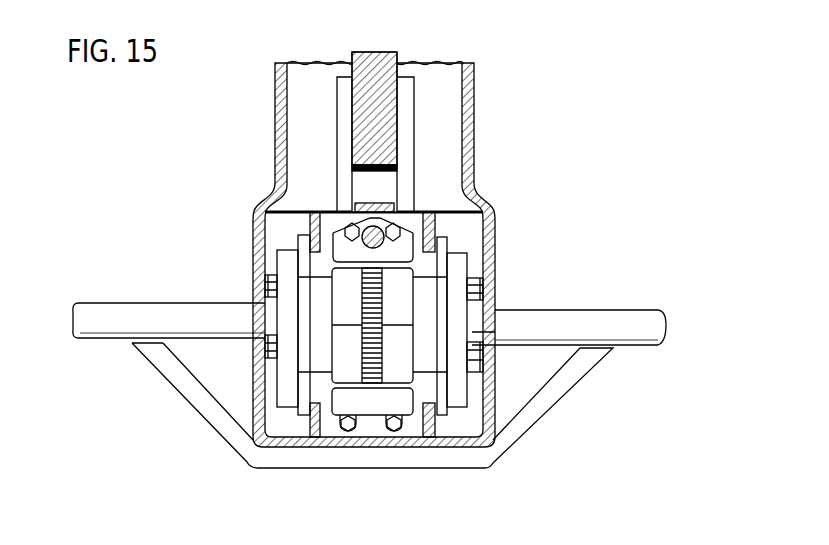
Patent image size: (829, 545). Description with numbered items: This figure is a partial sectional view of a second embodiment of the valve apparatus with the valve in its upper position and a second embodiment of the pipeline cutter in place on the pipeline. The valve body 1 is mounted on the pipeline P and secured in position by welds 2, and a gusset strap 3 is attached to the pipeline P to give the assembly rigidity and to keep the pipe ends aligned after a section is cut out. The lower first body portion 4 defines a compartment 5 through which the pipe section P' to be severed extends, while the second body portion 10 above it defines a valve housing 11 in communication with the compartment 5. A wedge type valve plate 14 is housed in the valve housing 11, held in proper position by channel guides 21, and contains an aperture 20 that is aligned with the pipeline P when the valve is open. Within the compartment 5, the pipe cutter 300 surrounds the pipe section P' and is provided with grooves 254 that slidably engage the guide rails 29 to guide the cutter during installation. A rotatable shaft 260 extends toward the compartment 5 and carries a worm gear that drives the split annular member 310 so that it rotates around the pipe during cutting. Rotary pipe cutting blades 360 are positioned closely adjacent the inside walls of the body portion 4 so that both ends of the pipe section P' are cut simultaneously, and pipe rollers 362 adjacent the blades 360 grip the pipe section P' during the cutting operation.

The valve body 1 is at (490, 117).
The welds 2 is at (252, 347).
The gusset strap 3 is at (538, 410).
The first body portion 4 is at (488, 240).
The compartment 5 is at (482, 226).
The second body portion 10 is at (472, 150).
The valve housing 11 is at (436, 78).
The wedge type valve plate 14 is at (383, 63).
The aperture 20 is at (380, 175).
The channel guides 21 is at (337, 125).
The guide rail 29 is at (314, 214).
The grooves 254 is at (308, 238).
The rotatable shaft 260 is at (373, 230).
The pipe cutter 300 is at (327, 303).
The split annular member 310 is at (285, 380).
The pipe cutting blades 360 is at (478, 287).
The pipe rollers 362 is at (273, 335).
The pipeline P is at (607, 294).
The pipe section P' is at (378, 323).